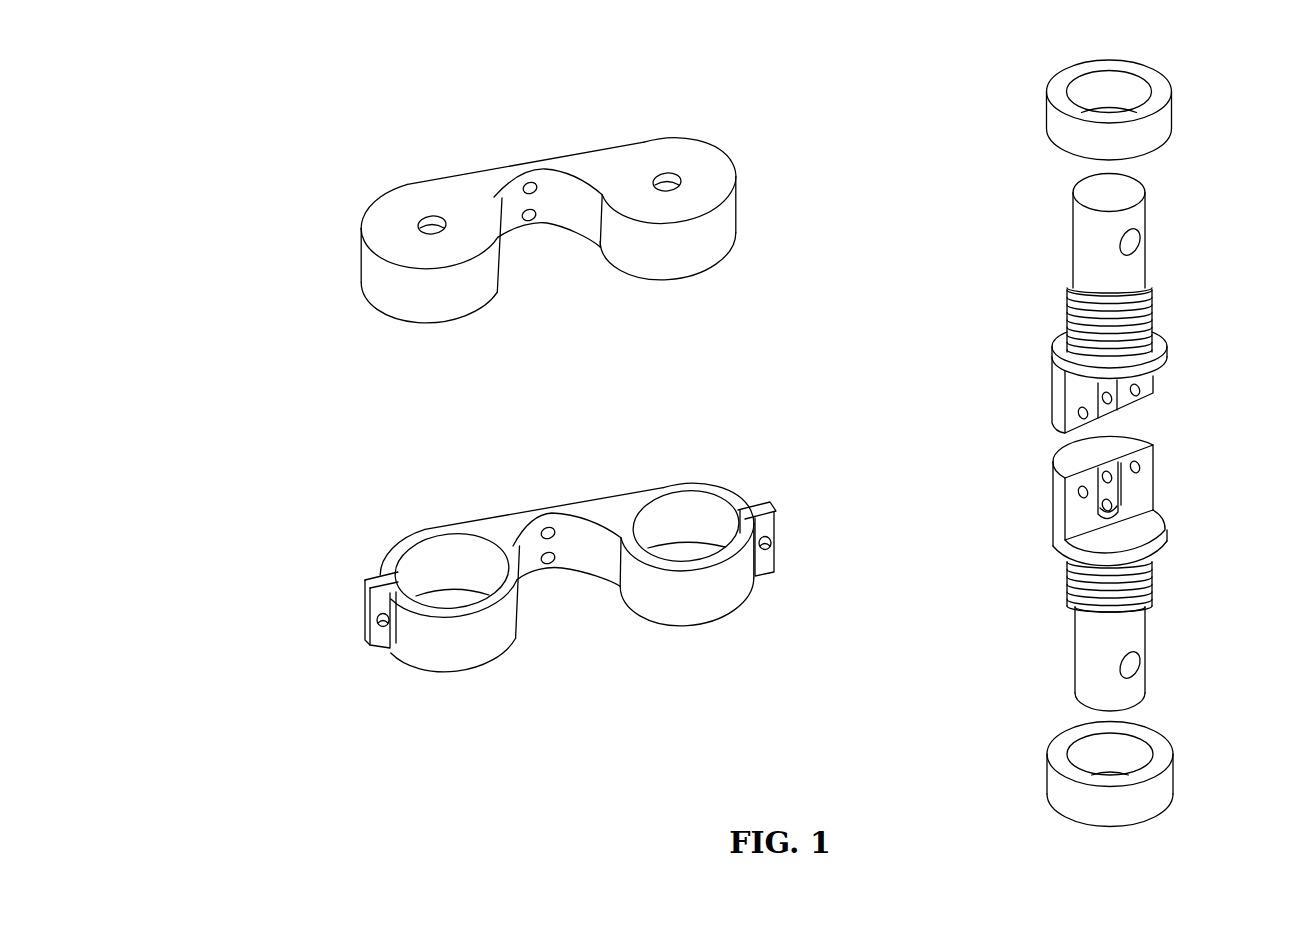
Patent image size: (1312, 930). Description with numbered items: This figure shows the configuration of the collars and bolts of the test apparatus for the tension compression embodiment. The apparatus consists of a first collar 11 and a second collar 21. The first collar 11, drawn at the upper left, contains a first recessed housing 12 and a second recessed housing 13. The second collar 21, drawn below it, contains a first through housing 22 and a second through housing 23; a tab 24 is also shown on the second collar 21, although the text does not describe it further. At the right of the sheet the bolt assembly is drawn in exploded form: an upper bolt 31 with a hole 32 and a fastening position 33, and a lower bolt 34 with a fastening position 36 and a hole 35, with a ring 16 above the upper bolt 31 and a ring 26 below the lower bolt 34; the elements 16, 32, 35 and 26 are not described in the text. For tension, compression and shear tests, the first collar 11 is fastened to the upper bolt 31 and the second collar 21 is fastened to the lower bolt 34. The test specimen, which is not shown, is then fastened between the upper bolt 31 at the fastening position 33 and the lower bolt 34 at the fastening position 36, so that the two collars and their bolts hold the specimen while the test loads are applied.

The first collar 11 is at (551, 177).
The first recessed housing 12 is at (424, 218).
The second recessed housing 13 is at (676, 178).
The second collar 21 is at (532, 580).
The first through housing 22 is at (442, 576).
The second through housing 23 is at (676, 520).
The mounting tab 24 is at (373, 639).
The upper retaining ring 16 is at (1175, 110).
The upper bolt 31 is at (1157, 291).
The upper cross hole 32 is at (1140, 240).
The fastening position 33 is at (1147, 384).
The lower bolt 34 is at (1159, 597).
The lower cross hole 35 is at (1146, 676).
The fastening position 36 is at (1147, 468).
The lower retaining ring 26 is at (1176, 786).